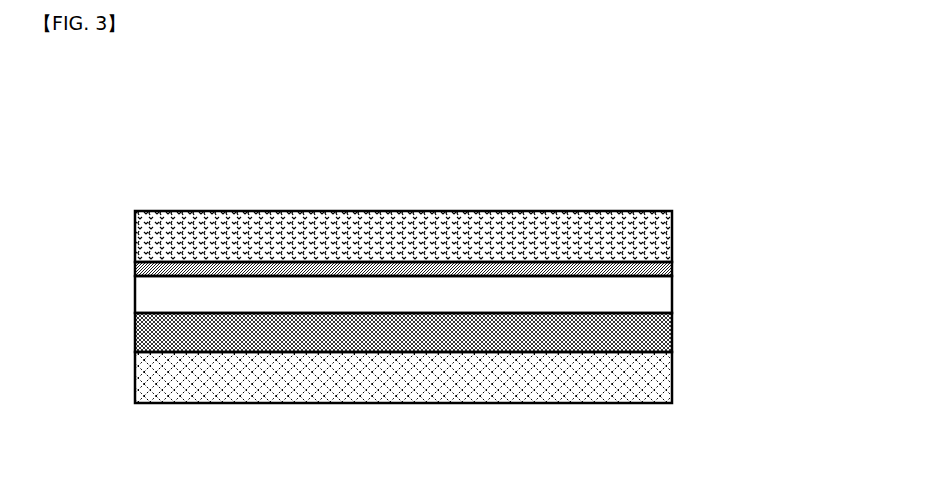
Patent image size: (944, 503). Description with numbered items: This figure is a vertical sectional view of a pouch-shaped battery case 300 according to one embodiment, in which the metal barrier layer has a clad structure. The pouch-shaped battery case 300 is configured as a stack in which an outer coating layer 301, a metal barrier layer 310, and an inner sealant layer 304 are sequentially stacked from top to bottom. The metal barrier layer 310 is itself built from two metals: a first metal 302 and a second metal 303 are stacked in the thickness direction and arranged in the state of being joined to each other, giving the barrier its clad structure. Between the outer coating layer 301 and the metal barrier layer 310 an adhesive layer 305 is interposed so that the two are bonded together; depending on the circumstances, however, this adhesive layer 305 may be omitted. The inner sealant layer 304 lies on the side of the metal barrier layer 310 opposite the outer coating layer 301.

The pouch-shaped battery case 300 is at (115, 147).
The outer coating layer 301 is at (673, 223).
The adhesive layer 305 is at (673, 263).
The first metal 302 is at (673, 300).
The second metal 303 is at (673, 340).
The inner sealant layer 304 is at (673, 382).
The metal barrier layer 310 is at (503, 314).